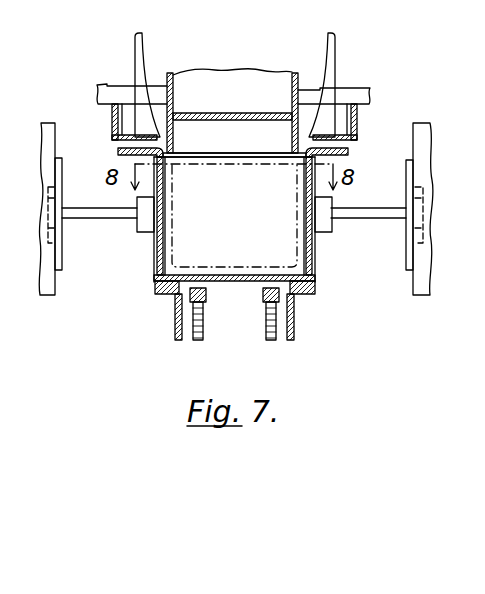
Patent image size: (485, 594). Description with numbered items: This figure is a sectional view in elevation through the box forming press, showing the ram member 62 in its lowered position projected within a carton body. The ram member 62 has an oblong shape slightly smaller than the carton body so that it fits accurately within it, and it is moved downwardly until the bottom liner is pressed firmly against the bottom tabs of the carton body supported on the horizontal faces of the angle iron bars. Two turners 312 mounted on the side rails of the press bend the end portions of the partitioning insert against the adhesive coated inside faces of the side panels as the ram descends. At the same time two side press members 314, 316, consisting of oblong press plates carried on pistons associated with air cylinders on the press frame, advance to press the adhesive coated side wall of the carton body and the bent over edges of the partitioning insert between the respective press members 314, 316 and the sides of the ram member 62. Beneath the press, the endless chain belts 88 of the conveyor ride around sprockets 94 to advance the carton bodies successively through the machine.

The turners 312 is at (141, 80).
The ram member 62 is at (266, 76).
The side press member 316 is at (157, 262).
The side press member 314 is at (316, 262).
The endless chain belts 88 is at (207, 294).
The sprockets 94 is at (205, 325).